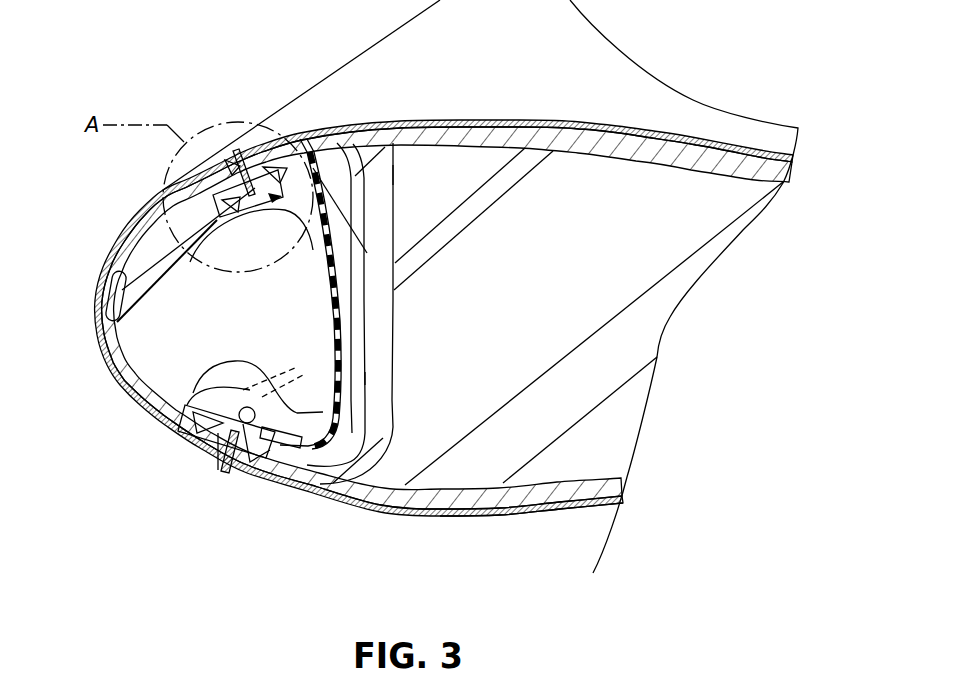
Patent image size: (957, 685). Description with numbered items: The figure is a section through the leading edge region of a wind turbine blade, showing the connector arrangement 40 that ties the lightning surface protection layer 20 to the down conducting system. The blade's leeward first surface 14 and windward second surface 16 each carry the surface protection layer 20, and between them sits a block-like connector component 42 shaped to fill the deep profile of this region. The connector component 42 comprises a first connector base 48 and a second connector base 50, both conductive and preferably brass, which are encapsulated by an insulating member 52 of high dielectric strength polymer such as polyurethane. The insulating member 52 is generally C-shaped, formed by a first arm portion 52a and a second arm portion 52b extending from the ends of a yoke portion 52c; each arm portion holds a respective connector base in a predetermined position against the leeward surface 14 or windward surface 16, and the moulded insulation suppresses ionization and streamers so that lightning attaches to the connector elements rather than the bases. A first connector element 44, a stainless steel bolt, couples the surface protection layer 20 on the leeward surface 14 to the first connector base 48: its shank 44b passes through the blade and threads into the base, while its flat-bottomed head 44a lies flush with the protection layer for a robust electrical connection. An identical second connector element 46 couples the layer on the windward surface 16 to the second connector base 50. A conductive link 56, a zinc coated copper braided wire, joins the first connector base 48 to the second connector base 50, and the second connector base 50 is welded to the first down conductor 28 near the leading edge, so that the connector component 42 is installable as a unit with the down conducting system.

The first surface 14 is at (683, 108).
The second surface 16 is at (523, 518).
The surface protection layer 20 is at (337, 125).
The first down conductor 28 is at (502, 183).
The connector arrangement 40 is at (76, 364).
The connector component 42 is at (401, 342).
The first connector element 44 is at (253, 143).
The head 44a is at (237, 167).
The shank 44b is at (292, 162).
The second connector element 46 is at (204, 480).
The first connector base 48 is at (394, 174).
The second connector base 50 is at (262, 455).
The insulating member 52 is at (396, 313).
The first arm portion 52a is at (207, 210).
The second arm portion 52b is at (137, 401).
The yoke portion 52c is at (388, 275).
The conductive link 56 is at (372, 378).